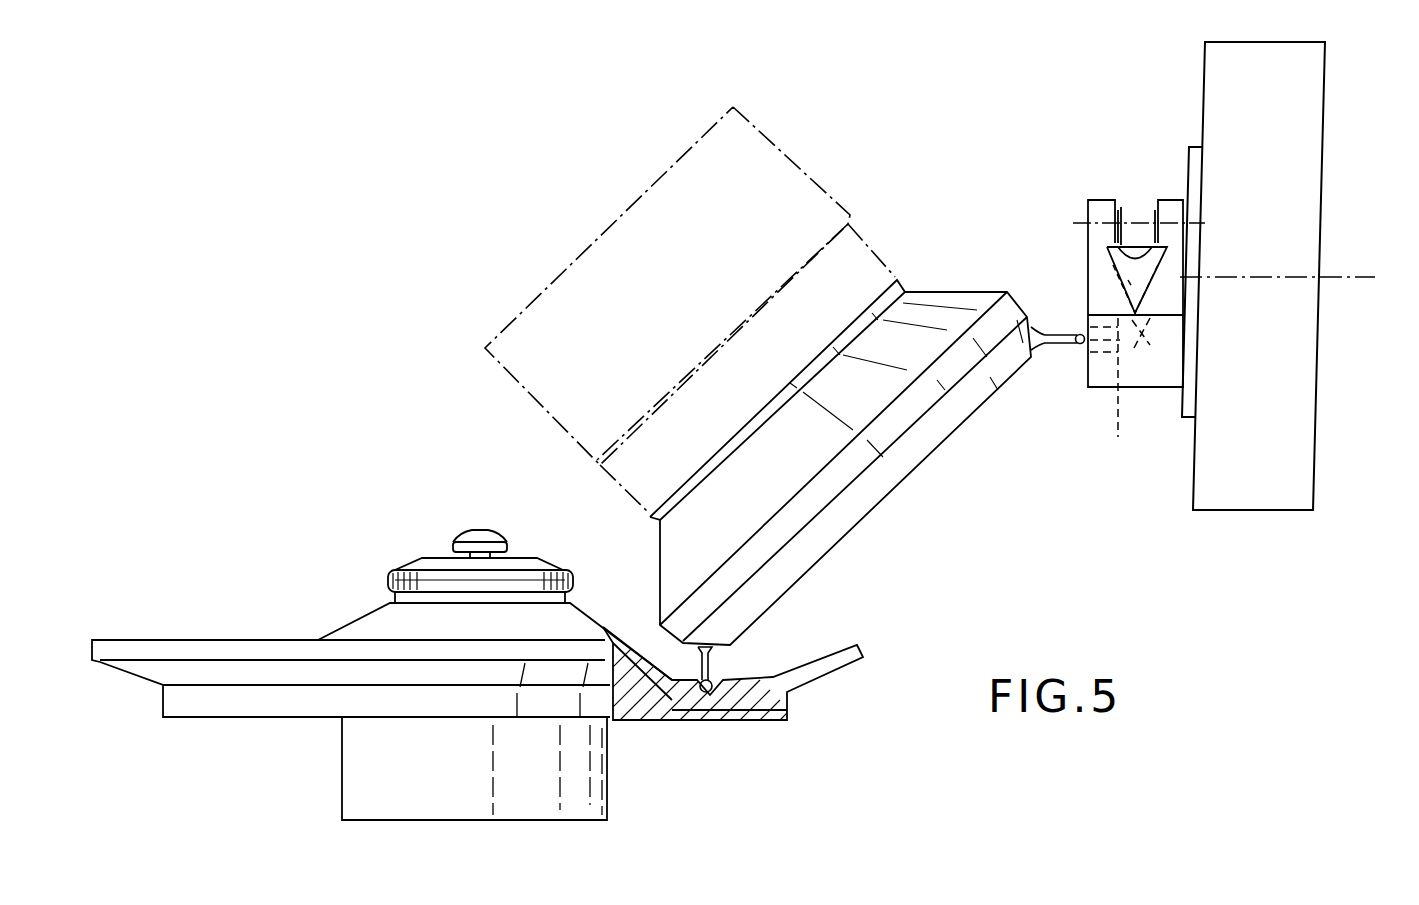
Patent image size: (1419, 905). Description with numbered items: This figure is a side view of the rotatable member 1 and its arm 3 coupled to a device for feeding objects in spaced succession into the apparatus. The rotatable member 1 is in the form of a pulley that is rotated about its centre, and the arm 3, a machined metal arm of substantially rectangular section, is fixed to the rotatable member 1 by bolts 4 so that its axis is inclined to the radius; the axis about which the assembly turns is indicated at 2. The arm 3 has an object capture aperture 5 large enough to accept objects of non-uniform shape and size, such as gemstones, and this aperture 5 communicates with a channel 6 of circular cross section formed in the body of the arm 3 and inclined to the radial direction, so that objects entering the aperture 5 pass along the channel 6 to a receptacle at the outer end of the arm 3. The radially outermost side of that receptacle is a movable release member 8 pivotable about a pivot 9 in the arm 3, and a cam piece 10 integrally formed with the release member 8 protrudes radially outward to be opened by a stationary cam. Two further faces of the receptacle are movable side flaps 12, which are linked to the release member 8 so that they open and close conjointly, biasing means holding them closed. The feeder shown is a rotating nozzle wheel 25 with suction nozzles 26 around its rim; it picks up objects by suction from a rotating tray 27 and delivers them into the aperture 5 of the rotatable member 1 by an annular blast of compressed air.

The rotatable member 1 is at (1220, 80).
The axis 2 is at (1335, 277).
The arm 3 is at (1100, 203).
The bolts 4 is at (1077, 345).
The aperture 5 is at (1105, 392).
The channel 6 is at (1145, 338).
The release member 8 is at (1083, 248).
The pivot 9 is at (1078, 222).
The cam piece 10 is at (1132, 210).
The side flaps 12 is at (1110, 270).
The nozzle wheel 25 is at (862, 507).
The suction nozzles 26 is at (1055, 332).
The rotating tray 27 is at (703, 720).